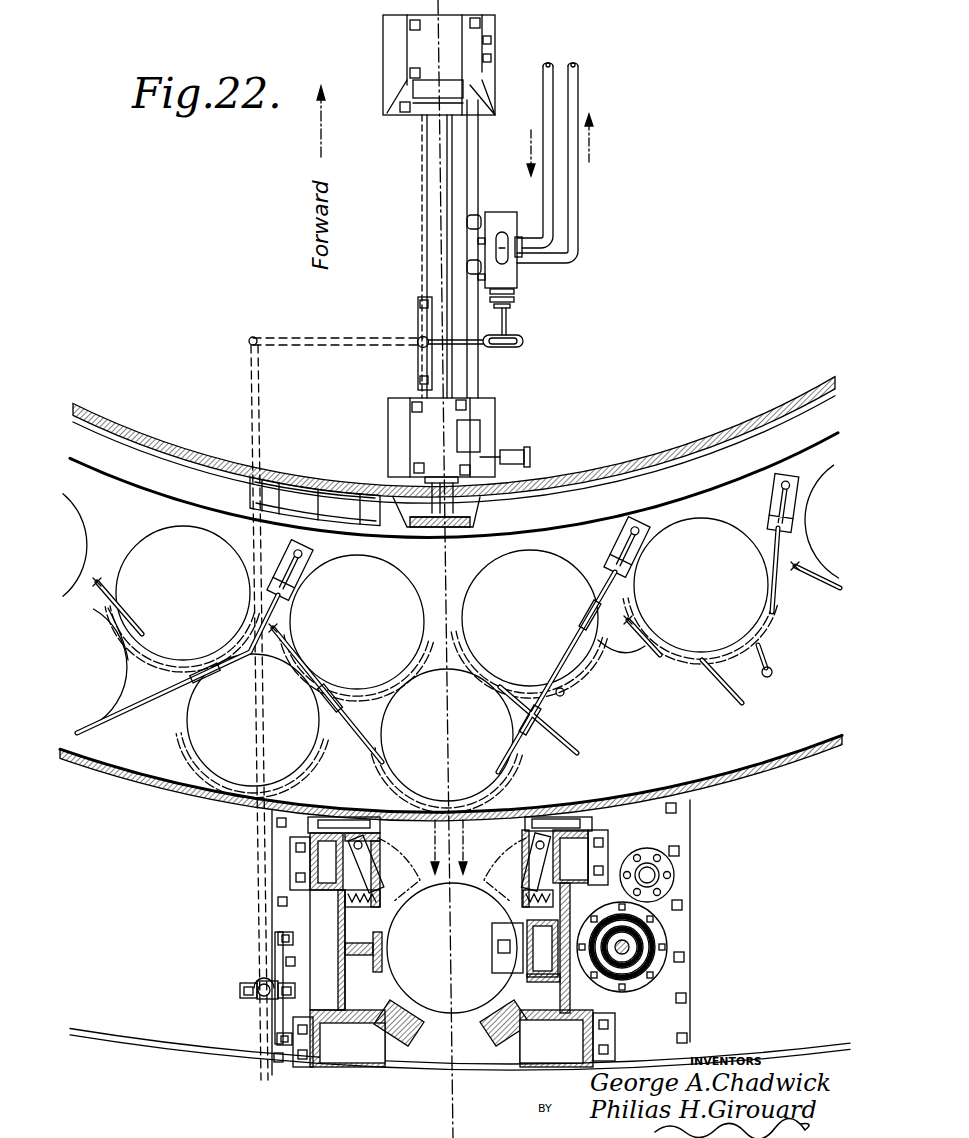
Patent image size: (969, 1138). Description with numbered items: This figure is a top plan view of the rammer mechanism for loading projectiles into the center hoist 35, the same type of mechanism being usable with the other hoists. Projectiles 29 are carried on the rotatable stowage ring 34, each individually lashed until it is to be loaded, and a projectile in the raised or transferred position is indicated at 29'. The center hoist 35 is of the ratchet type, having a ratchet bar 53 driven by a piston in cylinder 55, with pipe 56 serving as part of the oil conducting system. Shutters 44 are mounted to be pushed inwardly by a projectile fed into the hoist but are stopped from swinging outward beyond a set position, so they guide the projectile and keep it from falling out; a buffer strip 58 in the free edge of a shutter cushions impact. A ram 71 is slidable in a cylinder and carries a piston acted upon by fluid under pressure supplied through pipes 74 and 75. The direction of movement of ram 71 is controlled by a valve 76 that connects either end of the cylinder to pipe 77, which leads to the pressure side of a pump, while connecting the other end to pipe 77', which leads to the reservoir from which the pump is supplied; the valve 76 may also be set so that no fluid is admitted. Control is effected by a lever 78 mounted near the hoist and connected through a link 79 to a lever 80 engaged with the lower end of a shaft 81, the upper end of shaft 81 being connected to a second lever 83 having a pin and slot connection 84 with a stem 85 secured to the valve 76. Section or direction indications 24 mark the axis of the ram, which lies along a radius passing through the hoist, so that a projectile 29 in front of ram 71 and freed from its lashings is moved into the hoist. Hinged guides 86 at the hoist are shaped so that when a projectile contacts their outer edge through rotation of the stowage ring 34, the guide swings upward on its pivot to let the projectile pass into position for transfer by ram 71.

The section line / direction arrow 24 is at (440, 50).
The projectile 29 is at (530, 618).
The roll in raised position 29' is at (452, 881).
The stowage ring 34 is at (665, 707).
The center hoist 35 is at (464, 959).
The shutters 44 is at (403, 1048).
The ratchet bar 53 is at (523, 958).
The cylinder 55 is at (640, 990).
The pipe 56 is at (648, 848).
The buffer strip 58 is at (398, 1008).
The ram 71 is at (458, 504).
The pipe 74 is at (485, 392).
The pipe 75 is at (476, 163).
The valve 76 is at (503, 212).
The pipe 77 is at (530, 155).
The pipe 77' is at (570, 163).
The lever 78 is at (262, 996).
The link 79 is at (246, 408).
The lever 80 is at (350, 338).
The shaft 81 is at (417, 349).
The second lever 83 is at (462, 344).
The pin and slot connection 84 is at (520, 337).
The stem 85 is at (507, 322).
The hinged guides 86 is at (318, 800).